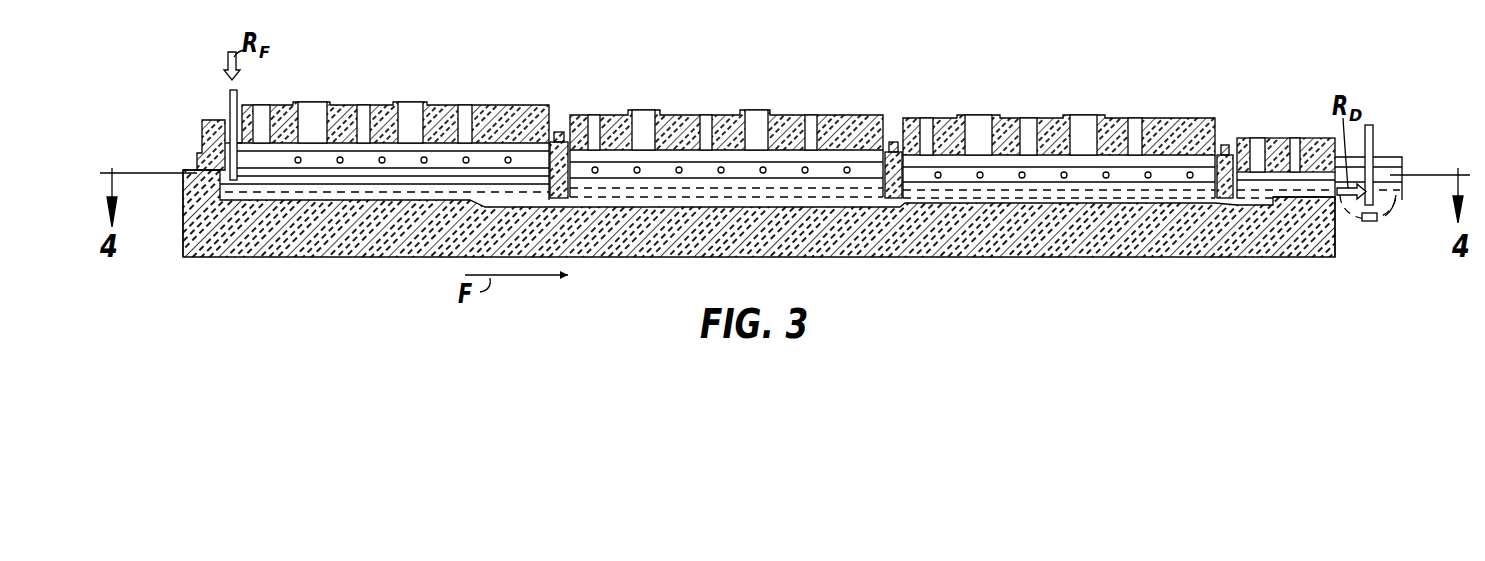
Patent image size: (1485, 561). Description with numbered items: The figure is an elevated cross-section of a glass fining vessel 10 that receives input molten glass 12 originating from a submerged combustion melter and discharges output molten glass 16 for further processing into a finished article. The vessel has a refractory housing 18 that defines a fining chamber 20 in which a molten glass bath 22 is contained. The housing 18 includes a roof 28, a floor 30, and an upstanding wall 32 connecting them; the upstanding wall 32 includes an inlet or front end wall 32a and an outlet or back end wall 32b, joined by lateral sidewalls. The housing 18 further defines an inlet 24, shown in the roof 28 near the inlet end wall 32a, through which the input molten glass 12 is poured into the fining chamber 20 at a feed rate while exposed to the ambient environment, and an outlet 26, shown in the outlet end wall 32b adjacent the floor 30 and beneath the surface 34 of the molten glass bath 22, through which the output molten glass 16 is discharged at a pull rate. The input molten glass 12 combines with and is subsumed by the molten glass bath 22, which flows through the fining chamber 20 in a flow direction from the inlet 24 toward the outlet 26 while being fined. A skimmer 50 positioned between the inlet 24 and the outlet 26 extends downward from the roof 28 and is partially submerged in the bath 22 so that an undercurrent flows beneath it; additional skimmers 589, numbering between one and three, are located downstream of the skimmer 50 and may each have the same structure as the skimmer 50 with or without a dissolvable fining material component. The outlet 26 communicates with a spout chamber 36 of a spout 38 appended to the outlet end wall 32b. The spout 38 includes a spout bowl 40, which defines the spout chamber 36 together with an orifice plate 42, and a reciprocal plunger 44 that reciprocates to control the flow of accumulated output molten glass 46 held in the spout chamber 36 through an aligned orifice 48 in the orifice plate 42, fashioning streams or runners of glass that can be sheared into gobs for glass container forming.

The glass fining vessel 10 is at (333, 83).
The input molten glass 12 is at (231, 93).
The output molten glass 16 is at (1335, 196).
The housing 18 is at (200, 160).
The fining chamber 20 is at (342, 146).
The molten glass bath 22 is at (703, 198).
The inlet 24 is at (230, 127).
The outlet 26 is at (1337, 210).
The roof 28 is at (510, 118).
The floor 30 is at (300, 244).
The upstanding wall 32 is at (190, 172).
The inlet end wall 32a is at (190, 183).
The outlet end wall 32b is at (1333, 205).
The surface of the molten glass bath 34 is at (367, 183).
The spout chamber 36 is at (1393, 198).
The spout 38 is at (1408, 162).
The spout bowl 40 is at (1405, 180).
The orifice plate 42 is at (1388, 212).
The reciprocal plunger 44 is at (1373, 132).
The accumulated output molten glass 46 is at (1385, 198).
The orifice 48 is at (1372, 221).
The skimmer 50 is at (560, 152).
The additional skimmers 589 is at (890, 147).